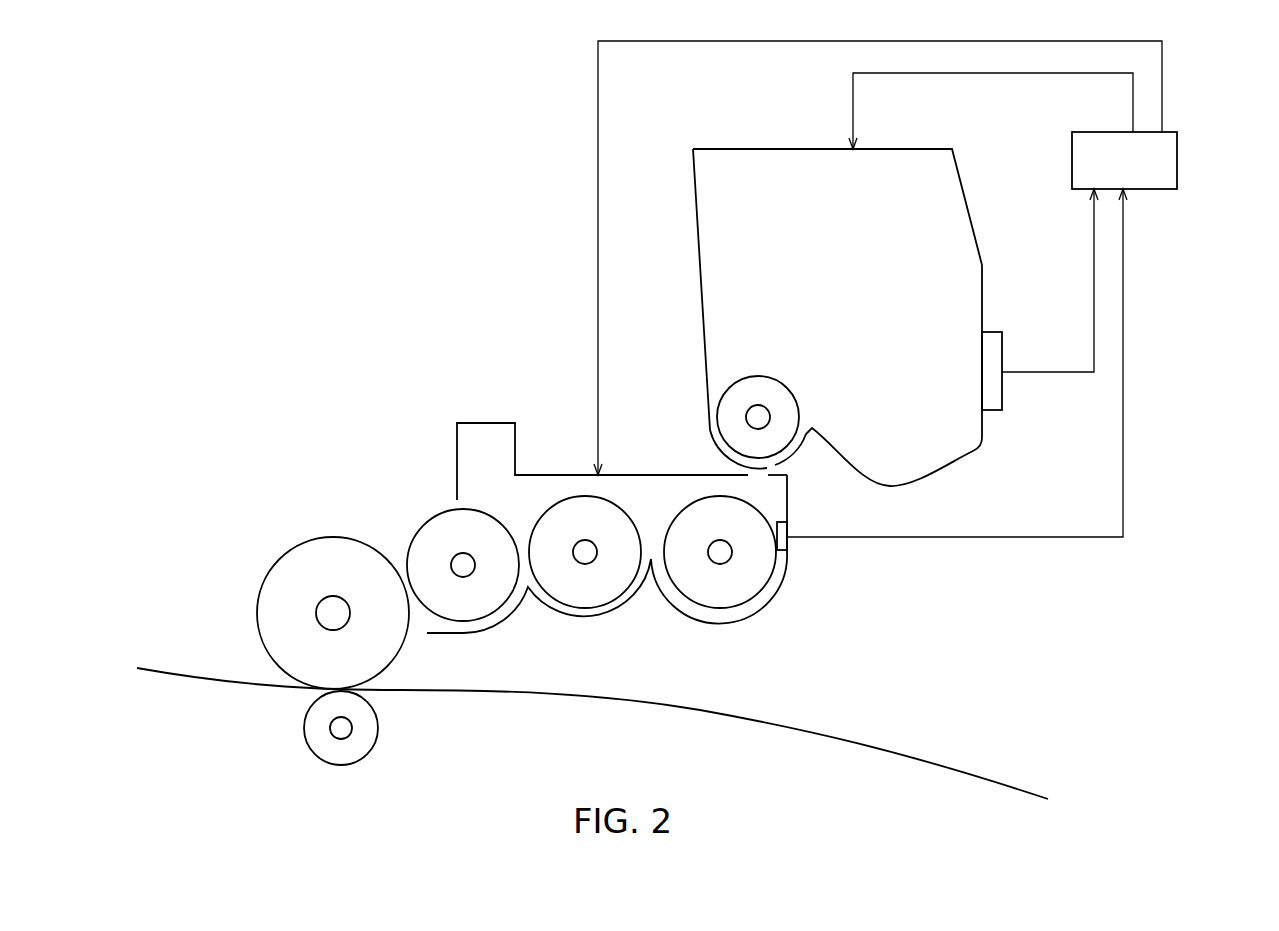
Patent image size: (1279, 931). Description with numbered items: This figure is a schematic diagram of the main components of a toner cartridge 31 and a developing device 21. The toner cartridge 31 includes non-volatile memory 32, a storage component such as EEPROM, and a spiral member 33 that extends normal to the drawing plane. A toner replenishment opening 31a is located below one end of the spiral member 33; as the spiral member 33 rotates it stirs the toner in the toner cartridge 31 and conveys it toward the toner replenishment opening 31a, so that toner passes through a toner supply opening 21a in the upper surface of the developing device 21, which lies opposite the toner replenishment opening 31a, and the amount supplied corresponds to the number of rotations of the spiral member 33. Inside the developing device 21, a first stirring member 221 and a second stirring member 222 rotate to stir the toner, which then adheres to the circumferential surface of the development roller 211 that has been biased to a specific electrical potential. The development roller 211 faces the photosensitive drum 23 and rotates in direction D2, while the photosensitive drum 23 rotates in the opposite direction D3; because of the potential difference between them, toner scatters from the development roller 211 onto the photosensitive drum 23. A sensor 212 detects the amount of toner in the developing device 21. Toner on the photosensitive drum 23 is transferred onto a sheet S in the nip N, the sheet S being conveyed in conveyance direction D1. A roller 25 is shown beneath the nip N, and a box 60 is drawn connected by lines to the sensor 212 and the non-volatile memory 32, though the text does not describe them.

The developing device 21 is at (644, 517).
The toner supply opening 21a is at (759, 479).
The development roller 211 is at (415, 550).
The sensor 212 is at (788, 570).
The first stirring member 221 is at (727, 592).
The second stirring member 222 is at (595, 598).
The photosensitive drum 23 is at (300, 545).
The pressing roller 25 is at (379, 733).
The toner cartridge 31 is at (813, 279).
The toner replenishment opening 31a is at (755, 460).
The non-volatile memory 32 is at (994, 330).
The spiral member 33 is at (758, 380).
The controller 60 is at (1177, 152).
The nip N is at (370, 692).
The sheet S is at (935, 762).
The conveyance direction D1 is at (675, 792).
The direction D2 is at (450, 500).
The direction D3 is at (258, 553).